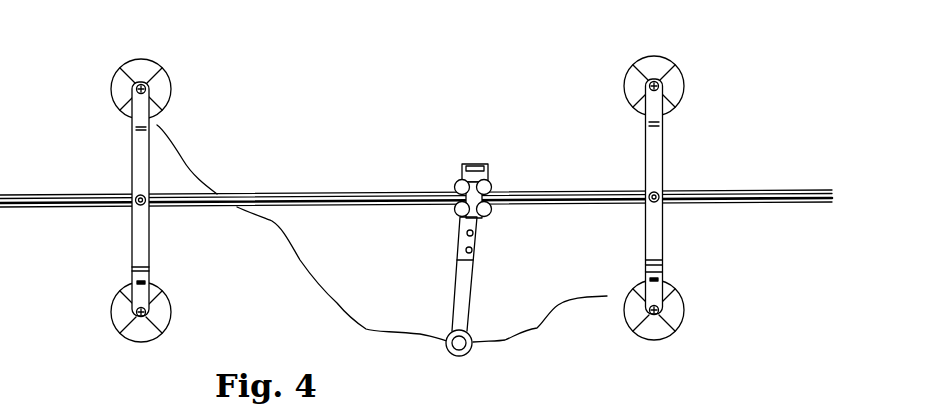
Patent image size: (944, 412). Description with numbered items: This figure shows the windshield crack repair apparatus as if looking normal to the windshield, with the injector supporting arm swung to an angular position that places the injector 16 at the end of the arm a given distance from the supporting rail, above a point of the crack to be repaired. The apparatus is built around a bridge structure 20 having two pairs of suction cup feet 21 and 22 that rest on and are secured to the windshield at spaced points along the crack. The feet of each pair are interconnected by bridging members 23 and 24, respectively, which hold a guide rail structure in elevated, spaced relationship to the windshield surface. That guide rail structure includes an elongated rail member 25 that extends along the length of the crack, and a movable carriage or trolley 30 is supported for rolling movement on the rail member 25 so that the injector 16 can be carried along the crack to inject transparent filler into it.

The injector 16 is at (451, 337).
The bridge structure 20 is at (416, 202).
The suction cup feet 21 is at (127, 92).
The suction cup feet 22 is at (635, 95).
The bridging member 23 is at (141, 248).
The bridging member 24 is at (654, 232).
The rail member 25 is at (332, 207).
The carriage or trolley 30 is at (482, 219).